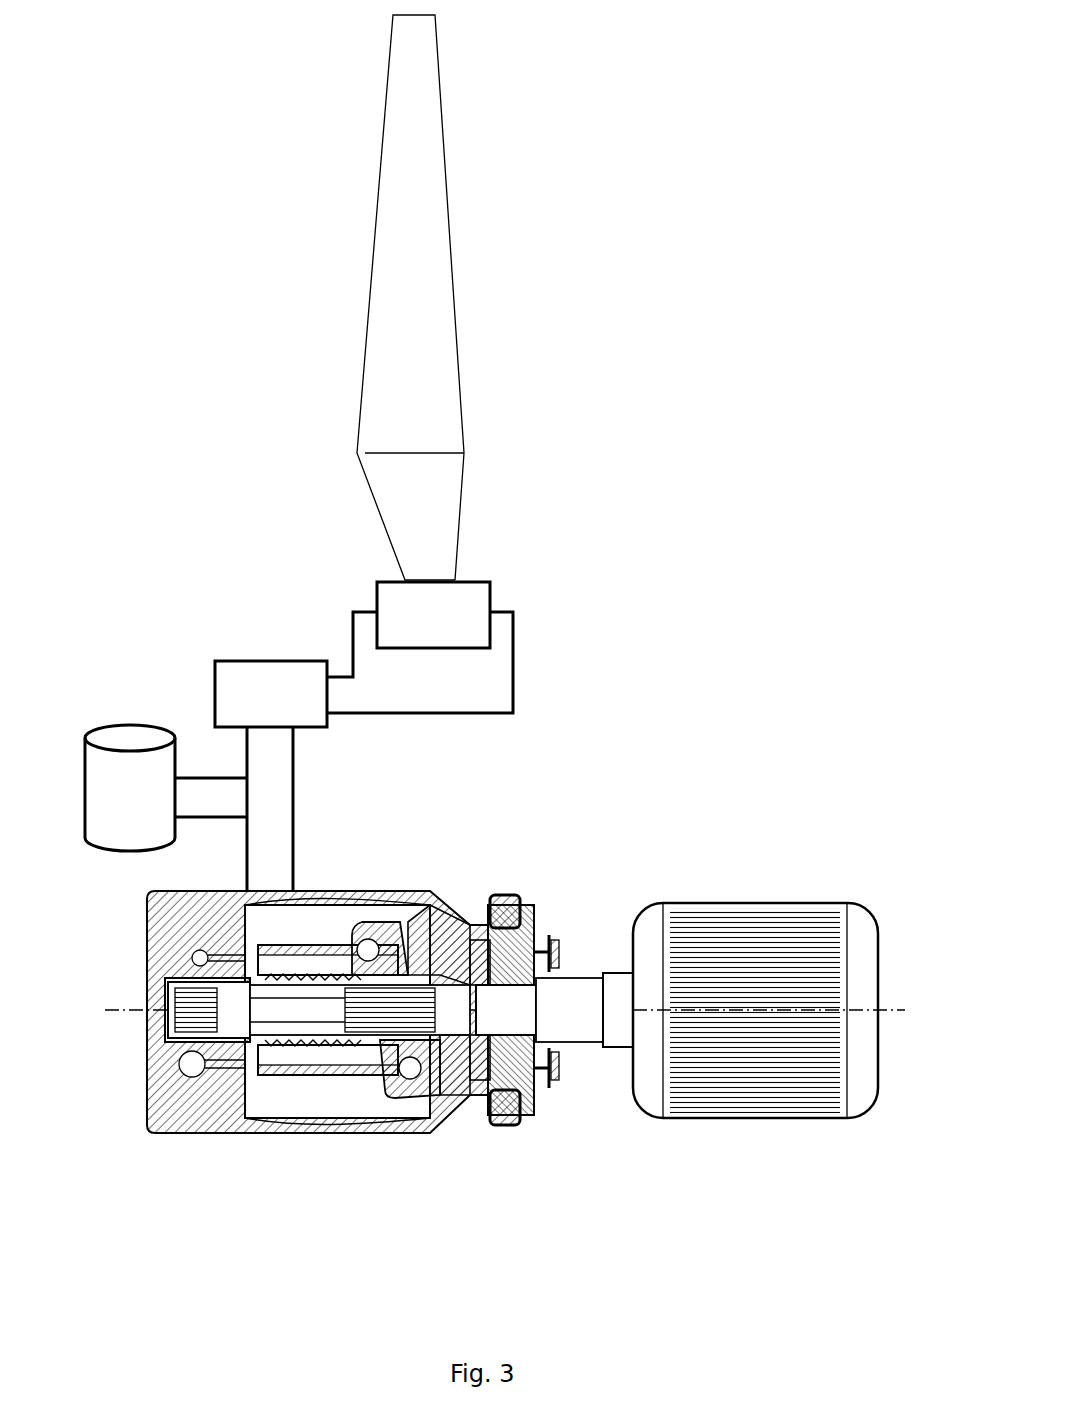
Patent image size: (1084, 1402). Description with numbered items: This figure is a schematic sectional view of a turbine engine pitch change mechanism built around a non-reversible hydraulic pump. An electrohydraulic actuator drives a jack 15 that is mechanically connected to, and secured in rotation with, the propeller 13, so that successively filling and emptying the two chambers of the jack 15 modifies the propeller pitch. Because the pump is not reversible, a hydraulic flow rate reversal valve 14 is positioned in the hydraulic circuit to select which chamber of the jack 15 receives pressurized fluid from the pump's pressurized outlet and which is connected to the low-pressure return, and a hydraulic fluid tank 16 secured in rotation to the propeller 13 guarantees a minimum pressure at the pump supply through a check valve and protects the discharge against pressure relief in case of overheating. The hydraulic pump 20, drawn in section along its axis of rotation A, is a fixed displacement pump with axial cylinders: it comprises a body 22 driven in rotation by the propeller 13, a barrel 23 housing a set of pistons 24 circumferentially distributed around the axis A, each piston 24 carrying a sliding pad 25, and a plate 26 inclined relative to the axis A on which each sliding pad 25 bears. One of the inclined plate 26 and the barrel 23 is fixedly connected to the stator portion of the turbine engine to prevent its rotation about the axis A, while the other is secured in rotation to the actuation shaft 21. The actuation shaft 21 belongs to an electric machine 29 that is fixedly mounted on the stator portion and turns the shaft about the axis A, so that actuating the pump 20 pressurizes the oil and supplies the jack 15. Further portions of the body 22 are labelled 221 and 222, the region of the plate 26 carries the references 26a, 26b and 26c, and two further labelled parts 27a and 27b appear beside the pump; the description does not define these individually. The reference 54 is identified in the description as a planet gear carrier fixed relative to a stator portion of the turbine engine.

The propeller 13 is at (395, 297).
The hydraulic flow rate reversal valve 14 is at (271, 694).
The jack 15 is at (433, 615).
The hydraulic fluid tank 16 is at (130, 788).
The hydraulic pump 20 is at (580, 1155).
The actuation shaft 21 is at (598, 915).
The body 22 is at (258, 1140).
The housing port 221 is at (215, 1134).
The housing port 222 is at (200, 975).
The barrel 23 is at (318, 1132).
The piston 24 is at (382, 1130).
The sliding pad 25 is at (440, 1126).
The plate 26 is at (447, 910).
The bearing outer ring 26a is at (373, 905).
The flange 26b is at (535, 912).
The flange portion 26c is at (548, 1052).
The seal 27a is at (478, 1120).
The seal 27b is at (490, 910).
The electric machine 29 is at (828, 900).
The planet gear carrier 54 is at (575, 912).
The axis of rotation A is at (913, 1010).